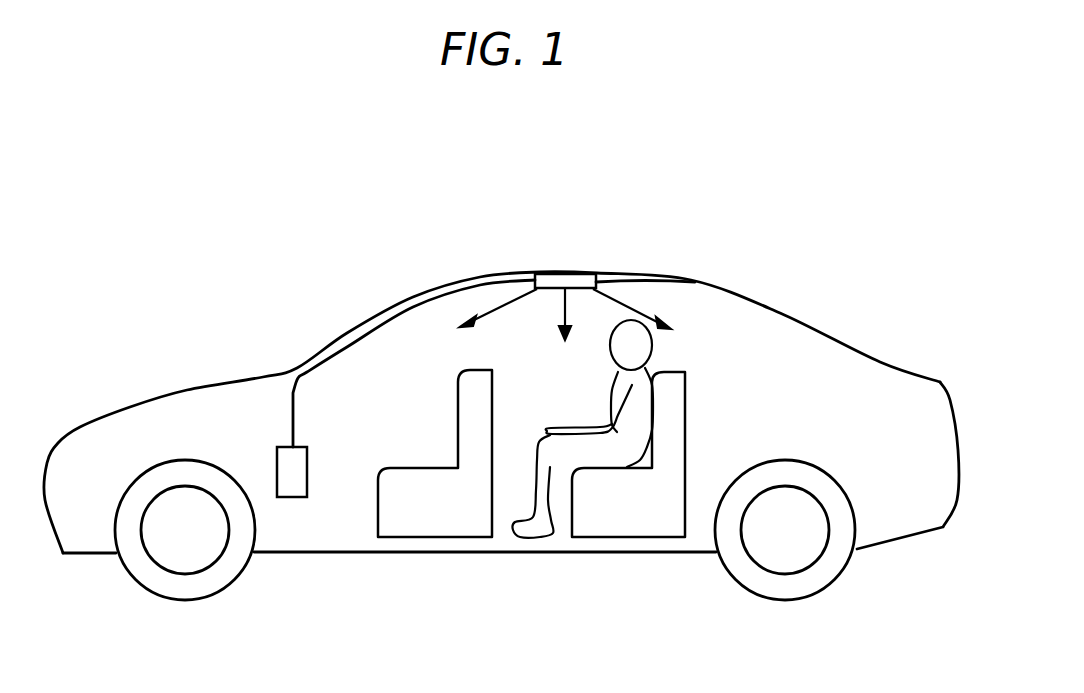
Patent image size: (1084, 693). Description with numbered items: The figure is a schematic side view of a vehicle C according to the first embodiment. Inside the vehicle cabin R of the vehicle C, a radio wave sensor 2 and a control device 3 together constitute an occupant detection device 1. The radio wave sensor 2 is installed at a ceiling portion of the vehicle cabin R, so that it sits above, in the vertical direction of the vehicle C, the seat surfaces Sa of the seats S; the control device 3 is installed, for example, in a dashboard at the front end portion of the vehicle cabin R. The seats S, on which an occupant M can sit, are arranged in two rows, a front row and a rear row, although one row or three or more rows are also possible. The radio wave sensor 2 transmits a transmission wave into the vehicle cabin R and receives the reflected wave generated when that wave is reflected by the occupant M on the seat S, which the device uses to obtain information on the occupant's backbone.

The occupant detection device 1 is at (588, 202).
The radio wave sensor 2 is at (567, 274).
The control device 3 is at (293, 472).
The vehicle C is at (865, 362).
The occupant M is at (640, 382).
The seat S is at (450, 503).
The seat surface Sa is at (422, 463).
The vehicle cabin R is at (423, 352).